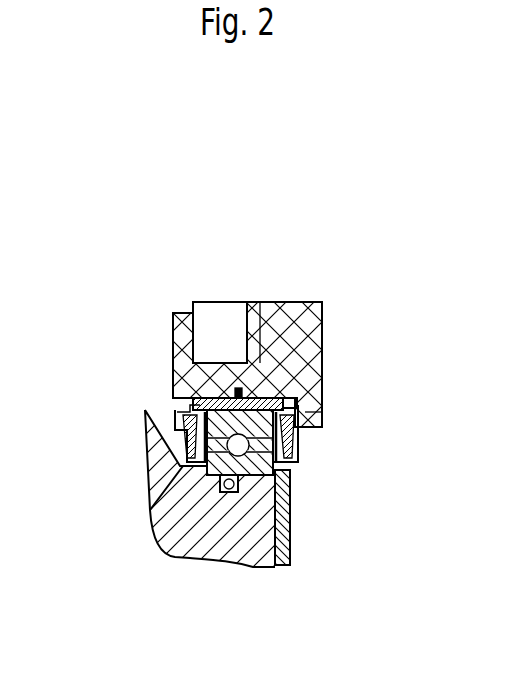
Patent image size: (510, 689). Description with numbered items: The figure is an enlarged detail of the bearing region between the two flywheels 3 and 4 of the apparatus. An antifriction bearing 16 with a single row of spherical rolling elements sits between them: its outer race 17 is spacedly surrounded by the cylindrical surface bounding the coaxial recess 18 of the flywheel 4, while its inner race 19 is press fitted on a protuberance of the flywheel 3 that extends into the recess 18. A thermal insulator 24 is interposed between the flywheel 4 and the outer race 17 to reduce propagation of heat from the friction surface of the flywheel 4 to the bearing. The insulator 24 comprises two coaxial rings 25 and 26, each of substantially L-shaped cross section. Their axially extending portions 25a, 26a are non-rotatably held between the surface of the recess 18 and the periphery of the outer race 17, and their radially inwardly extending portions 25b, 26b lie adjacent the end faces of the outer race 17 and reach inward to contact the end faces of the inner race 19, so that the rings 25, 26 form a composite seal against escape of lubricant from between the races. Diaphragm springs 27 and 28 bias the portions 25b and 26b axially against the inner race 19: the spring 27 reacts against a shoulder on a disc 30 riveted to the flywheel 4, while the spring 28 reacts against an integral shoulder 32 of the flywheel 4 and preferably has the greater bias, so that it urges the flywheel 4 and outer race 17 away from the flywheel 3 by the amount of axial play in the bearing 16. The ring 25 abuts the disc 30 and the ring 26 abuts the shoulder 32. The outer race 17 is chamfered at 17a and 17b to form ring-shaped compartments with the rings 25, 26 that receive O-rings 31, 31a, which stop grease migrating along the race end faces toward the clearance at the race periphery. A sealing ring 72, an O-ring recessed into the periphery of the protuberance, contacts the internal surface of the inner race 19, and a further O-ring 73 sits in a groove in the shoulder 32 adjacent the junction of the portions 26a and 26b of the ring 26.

The flywheel 3 is at (180, 535).
The flywheel 4 is at (303, 360).
The antifriction bearing 16 is at (290, 550).
The outer race 17 is at (199, 396).
The chamfer 17a is at (183, 438).
The chamfer 17b is at (291, 473).
The recess 18 is at (294, 302).
The inner race 19 is at (214, 480).
The thermal insulator 24 is at (250, 398).
The ring 25 is at (191, 399).
The axially extending portion 25a is at (235, 388).
The radially inwardly extending portion 25b is at (180, 462).
The ring 26 is at (318, 378).
The axially extending portion 26a is at (308, 378).
The radially inwardly extending portion 26b is at (298, 448).
The diaphragm spring 27 is at (165, 470).
The diaphragm spring 28 is at (292, 452).
The disc 30 is at (183, 400).
The O-ring 31 is at (145, 410).
The O-ring 31a is at (303, 418).
The shoulder 32 is at (307, 412).
The sealing ring 72 is at (232, 491).
The O-ring 73 is at (320, 393).